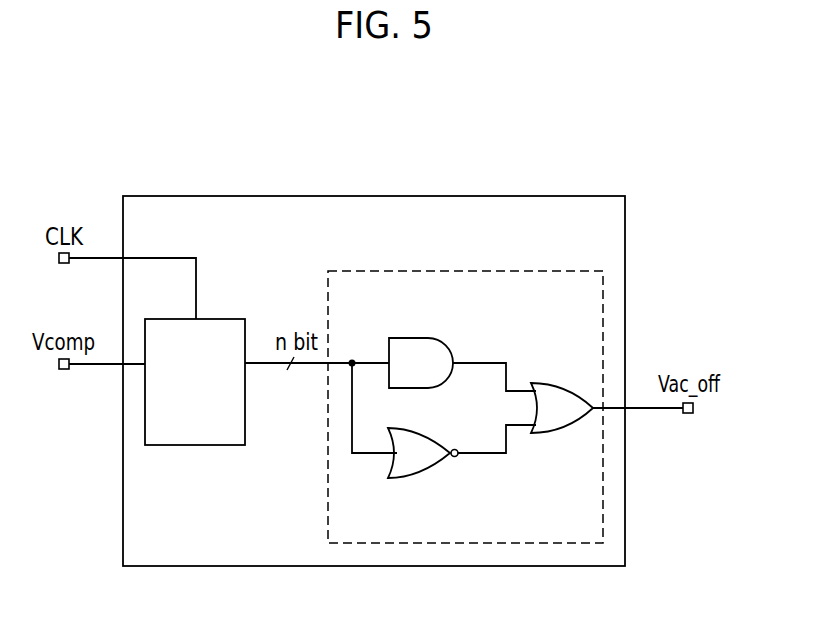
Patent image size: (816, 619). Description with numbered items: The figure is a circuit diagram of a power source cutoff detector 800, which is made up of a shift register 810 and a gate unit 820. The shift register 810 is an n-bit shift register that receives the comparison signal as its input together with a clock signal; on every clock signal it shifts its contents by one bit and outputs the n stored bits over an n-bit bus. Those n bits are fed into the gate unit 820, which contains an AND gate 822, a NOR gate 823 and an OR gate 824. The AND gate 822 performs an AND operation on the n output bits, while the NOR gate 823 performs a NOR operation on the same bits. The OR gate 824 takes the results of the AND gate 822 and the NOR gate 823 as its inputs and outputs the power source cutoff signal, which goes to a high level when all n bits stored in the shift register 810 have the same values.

The power source cutoff detector 800 is at (367, 195).
The shift register 810 is at (195, 446).
The gate unit 820 is at (483, 270).
The AND gate 822 is at (413, 337).
The NOR gate 823 is at (410, 480).
The OR gate 824 is at (562, 383).